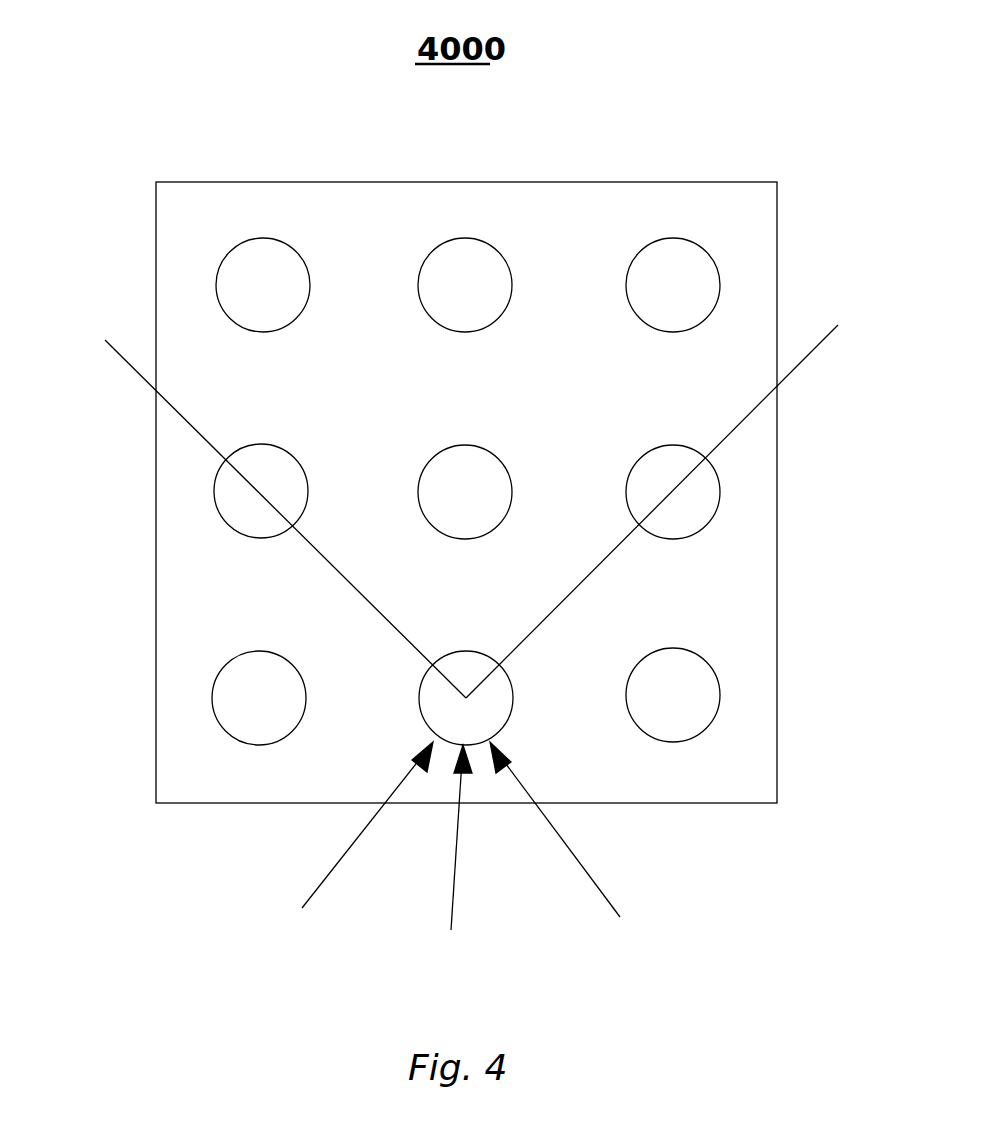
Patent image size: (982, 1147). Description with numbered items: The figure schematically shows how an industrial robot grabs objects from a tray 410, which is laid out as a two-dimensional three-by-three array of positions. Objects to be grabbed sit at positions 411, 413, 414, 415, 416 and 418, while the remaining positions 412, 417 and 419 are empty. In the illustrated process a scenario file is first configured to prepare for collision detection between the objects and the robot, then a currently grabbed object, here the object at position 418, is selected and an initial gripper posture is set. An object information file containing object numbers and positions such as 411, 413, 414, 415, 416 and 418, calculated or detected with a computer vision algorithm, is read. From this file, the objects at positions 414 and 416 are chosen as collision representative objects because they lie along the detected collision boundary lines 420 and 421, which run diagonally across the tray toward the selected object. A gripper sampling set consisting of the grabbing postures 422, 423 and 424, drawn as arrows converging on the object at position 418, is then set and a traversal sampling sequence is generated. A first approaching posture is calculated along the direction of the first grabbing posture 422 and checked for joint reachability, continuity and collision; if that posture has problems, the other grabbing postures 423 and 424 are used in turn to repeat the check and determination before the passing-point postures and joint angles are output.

The tray 410 is at (740, 182).
The position with object to be grabbed 411 is at (217, 285).
The empty position 412 is at (470, 238).
The position with object to be grabbed 413 is at (671, 238).
The collision representative object position 414 is at (213, 493).
The position with object to be grabbed 415 is at (468, 445).
The collision representative object position 416 is at (720, 492).
The empty position 417 is at (212, 705).
The currently grabbed object position 418 is at (513, 698).
The empty position 419 is at (718, 703).
The collision boundary line 420 is at (316, 553).
The collision boundary line 421 is at (640, 552).
The first grabbing posture 422 is at (451, 860).
The grabbing posture 423 is at (350, 847).
The grabbing posture 424 is at (572, 850).